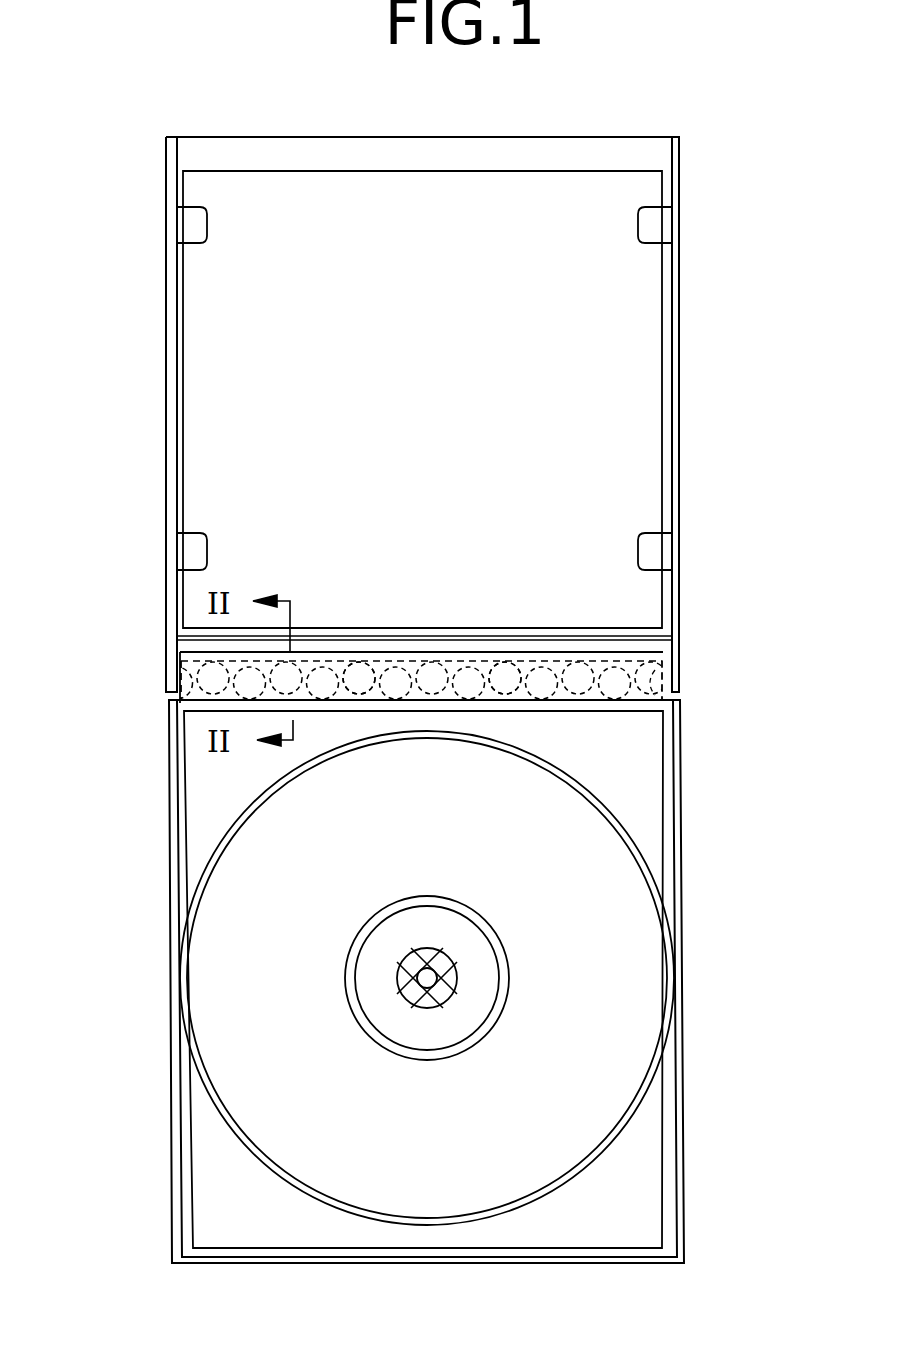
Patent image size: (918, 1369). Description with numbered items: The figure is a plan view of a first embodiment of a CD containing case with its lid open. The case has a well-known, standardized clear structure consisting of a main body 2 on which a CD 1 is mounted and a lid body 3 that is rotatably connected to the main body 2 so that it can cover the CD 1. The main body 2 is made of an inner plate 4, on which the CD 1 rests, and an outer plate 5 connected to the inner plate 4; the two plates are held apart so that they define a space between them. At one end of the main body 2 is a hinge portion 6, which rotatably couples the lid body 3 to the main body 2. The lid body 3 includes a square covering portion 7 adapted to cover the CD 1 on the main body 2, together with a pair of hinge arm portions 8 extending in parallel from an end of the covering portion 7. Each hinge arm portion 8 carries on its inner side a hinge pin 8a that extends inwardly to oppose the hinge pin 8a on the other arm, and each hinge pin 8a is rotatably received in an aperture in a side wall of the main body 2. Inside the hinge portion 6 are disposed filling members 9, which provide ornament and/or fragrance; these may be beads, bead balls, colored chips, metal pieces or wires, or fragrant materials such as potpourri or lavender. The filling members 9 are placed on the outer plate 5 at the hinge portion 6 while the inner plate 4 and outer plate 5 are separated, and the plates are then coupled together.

The CD 1 is at (215, 975).
The main body 2 is at (163, 1155).
The lid body 3 is at (158, 408).
The inner plate 4 is at (655, 790).
The outer plate 5 is at (684, 1058).
The hinge portion 6 is at (118, 663).
The covering portion 7 is at (630, 353).
The hinge arm portion 8 is at (176, 667).
The hinge pin 8a is at (680, 693).
The filling members 9 is at (369, 667).